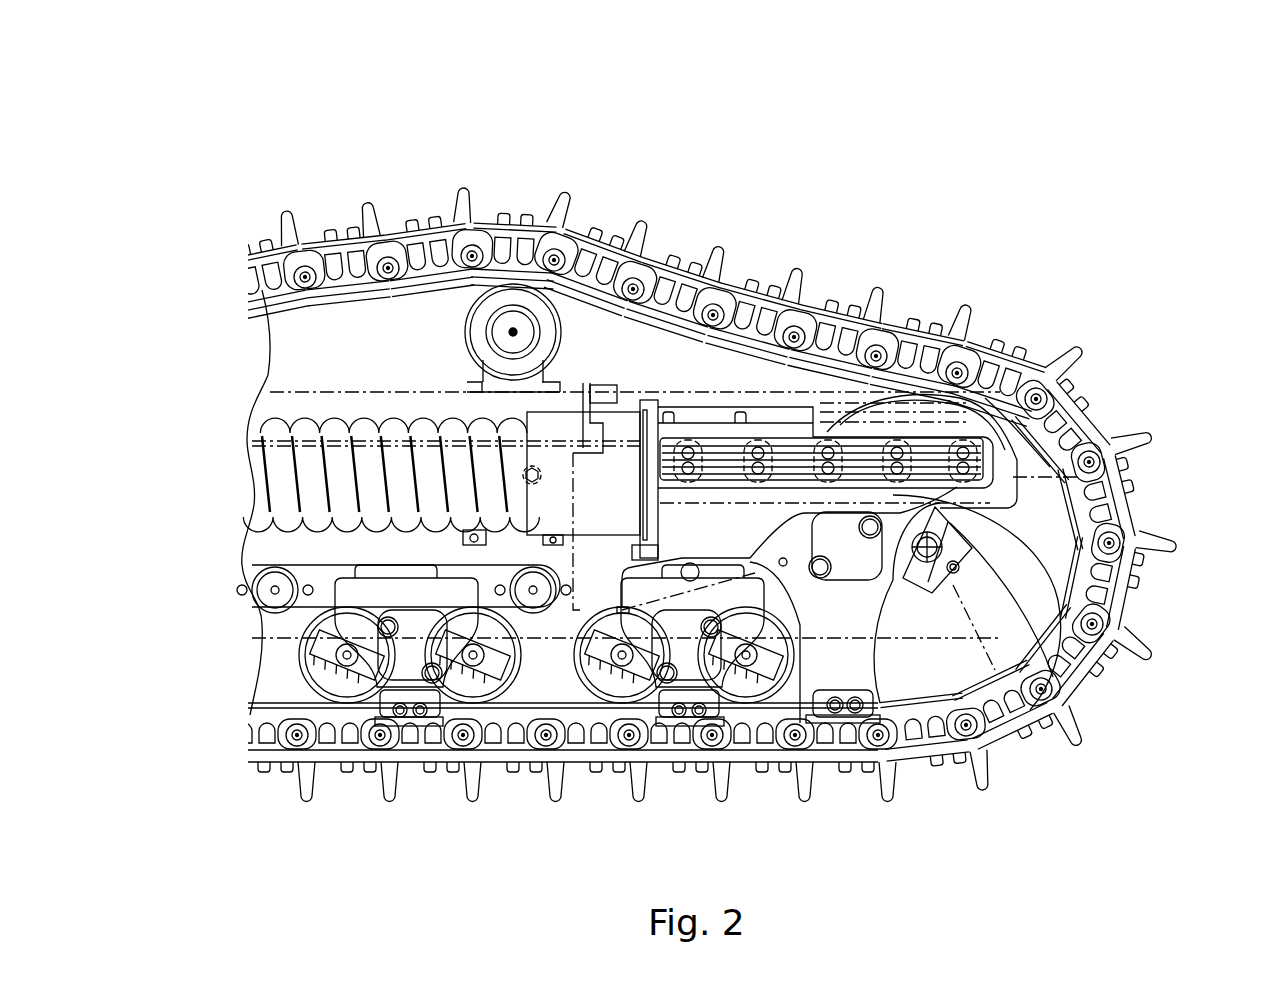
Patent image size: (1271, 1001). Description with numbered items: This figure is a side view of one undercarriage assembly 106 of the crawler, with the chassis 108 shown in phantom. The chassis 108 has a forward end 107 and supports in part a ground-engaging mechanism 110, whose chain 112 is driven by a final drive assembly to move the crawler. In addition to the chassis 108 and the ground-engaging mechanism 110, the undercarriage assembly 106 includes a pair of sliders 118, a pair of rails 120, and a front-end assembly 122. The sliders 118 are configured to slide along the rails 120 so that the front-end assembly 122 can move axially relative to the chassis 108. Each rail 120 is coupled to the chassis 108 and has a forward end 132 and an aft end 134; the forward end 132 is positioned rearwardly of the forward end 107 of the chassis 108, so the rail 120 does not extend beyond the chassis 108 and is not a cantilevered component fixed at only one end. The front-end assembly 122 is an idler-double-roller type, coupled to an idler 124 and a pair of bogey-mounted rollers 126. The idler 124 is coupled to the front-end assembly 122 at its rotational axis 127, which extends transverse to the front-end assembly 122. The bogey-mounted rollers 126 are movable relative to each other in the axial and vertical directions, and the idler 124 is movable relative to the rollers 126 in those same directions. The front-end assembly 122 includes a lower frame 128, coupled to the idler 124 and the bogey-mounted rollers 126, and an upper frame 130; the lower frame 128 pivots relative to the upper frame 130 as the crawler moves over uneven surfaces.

The undercarriage assembly 106 is at (868, 138).
The forward end 107 is at (1120, 458).
The chassis 108 is at (308, 392).
The ground-engaging mechanism 110 is at (511, 213).
The chain 112 is at (328, 753).
The sliders 118 is at (810, 400).
The rails 120 is at (722, 458).
The front-end assembly 122 is at (1048, 640).
The idler 124 is at (1043, 522).
The bogey-mounted rollers 126 is at (782, 700).
The rotational axis 127 is at (1022, 700).
The lower frame 128 is at (858, 633).
The upper frame 130 is at (950, 537).
The forward end 132 is at (987, 462).
The aft end 134 is at (633, 412).